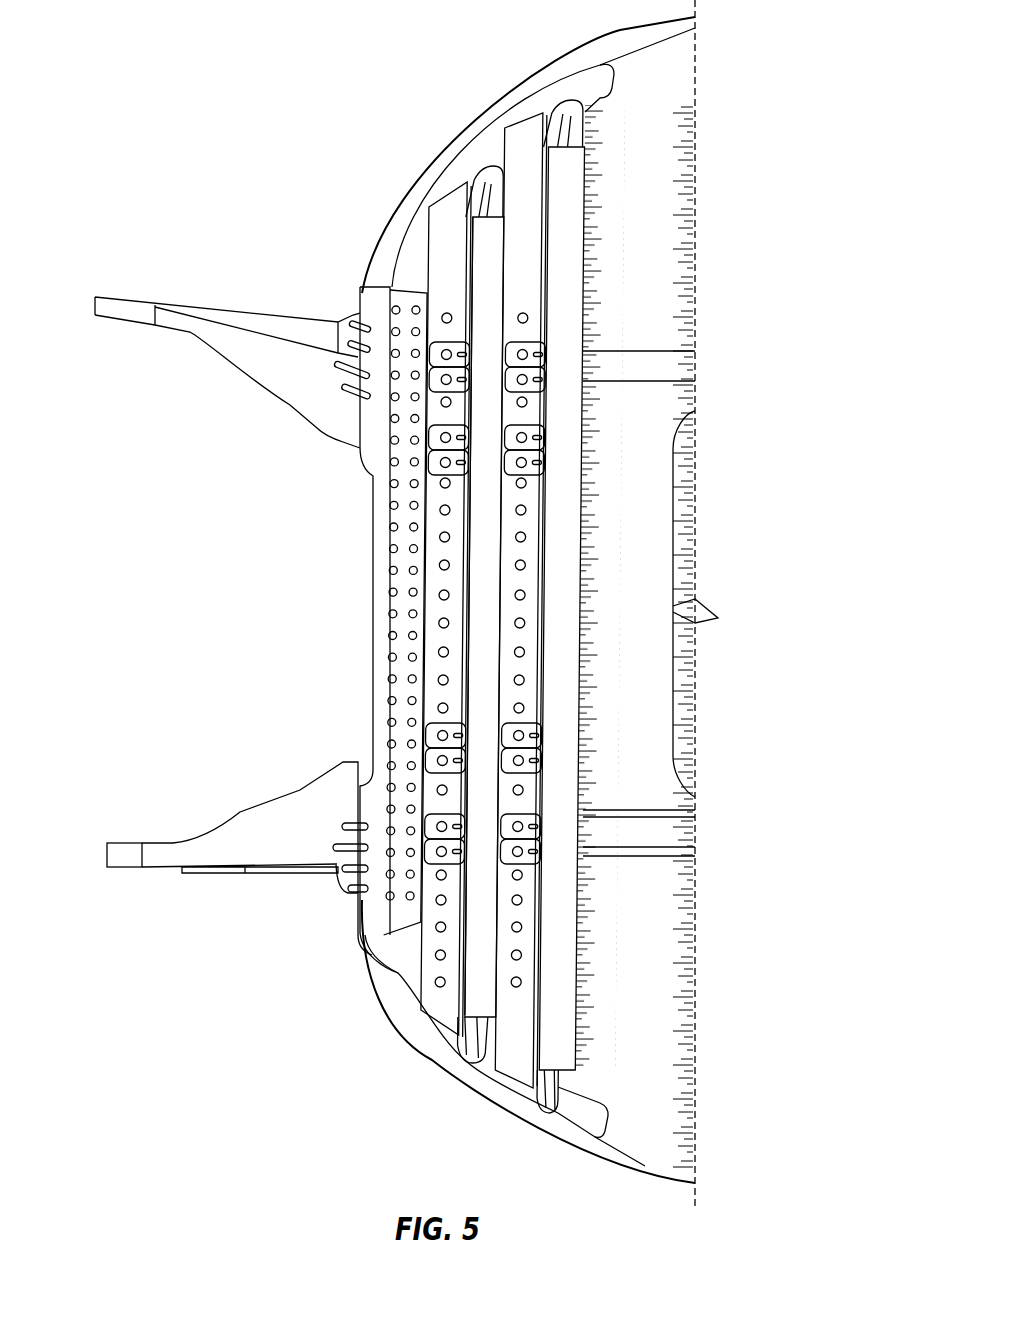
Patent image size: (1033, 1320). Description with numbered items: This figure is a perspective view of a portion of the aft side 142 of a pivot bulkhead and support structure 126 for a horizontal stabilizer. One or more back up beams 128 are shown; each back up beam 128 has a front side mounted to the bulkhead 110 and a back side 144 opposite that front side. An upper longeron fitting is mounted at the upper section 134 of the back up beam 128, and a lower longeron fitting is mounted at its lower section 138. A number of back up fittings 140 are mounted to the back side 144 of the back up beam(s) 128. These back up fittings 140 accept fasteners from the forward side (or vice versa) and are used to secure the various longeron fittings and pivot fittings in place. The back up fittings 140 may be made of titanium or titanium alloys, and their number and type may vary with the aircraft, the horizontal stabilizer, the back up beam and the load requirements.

The bulkhead 110 is at (688, 218).
The pivot bulkhead and support structure 126 is at (320, 668).
The back up beam 128 is at (530, 232).
The upper section 134 is at (300, 262).
The lower section 138 is at (212, 790).
The back up fittings 140 is at (533, 348).
The aft side 142 is at (682, 998).
The back side 144 is at (558, 1007).